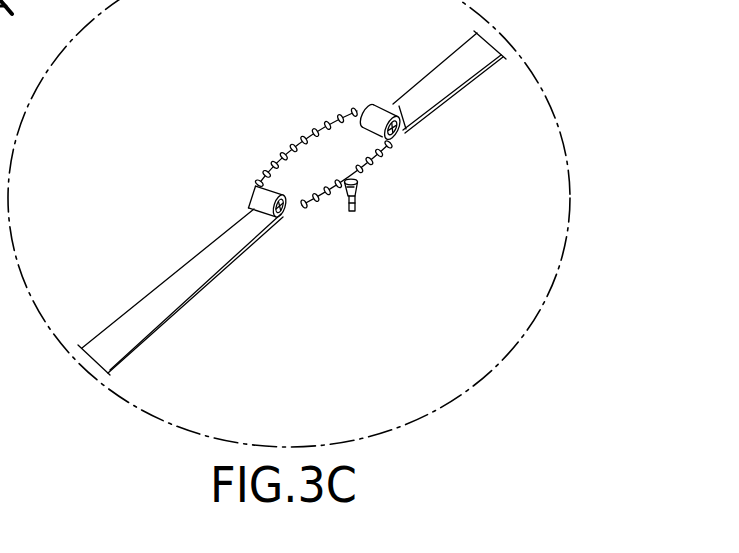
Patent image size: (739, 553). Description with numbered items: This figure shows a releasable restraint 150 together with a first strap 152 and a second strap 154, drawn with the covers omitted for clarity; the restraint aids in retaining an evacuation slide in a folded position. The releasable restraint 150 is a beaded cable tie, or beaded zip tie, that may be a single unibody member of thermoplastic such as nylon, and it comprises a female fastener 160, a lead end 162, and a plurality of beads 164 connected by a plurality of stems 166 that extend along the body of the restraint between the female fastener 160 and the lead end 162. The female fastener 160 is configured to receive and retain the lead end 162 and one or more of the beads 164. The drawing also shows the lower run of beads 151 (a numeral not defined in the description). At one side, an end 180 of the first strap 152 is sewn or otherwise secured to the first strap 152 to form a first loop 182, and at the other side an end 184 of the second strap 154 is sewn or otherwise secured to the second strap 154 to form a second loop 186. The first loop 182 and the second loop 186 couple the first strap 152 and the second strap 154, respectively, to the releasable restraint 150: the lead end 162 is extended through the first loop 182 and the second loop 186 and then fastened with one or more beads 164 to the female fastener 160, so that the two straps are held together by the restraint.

The releasable restraint 150 is at (289, 103).
The lower bead chain 151 is at (322, 195).
The first strap 152 is at (128, 328).
The second strap 154 is at (458, 78).
The female fastener 160 is at (364, 190).
The lead end 162 is at (352, 203).
The beads 164 is at (263, 181).
The stems 166 is at (338, 117).
The end of first strap 180 is at (257, 200).
The first loop 182 is at (293, 236).
The end of second strap 184 is at (384, 104).
The second loop 186 is at (416, 141).